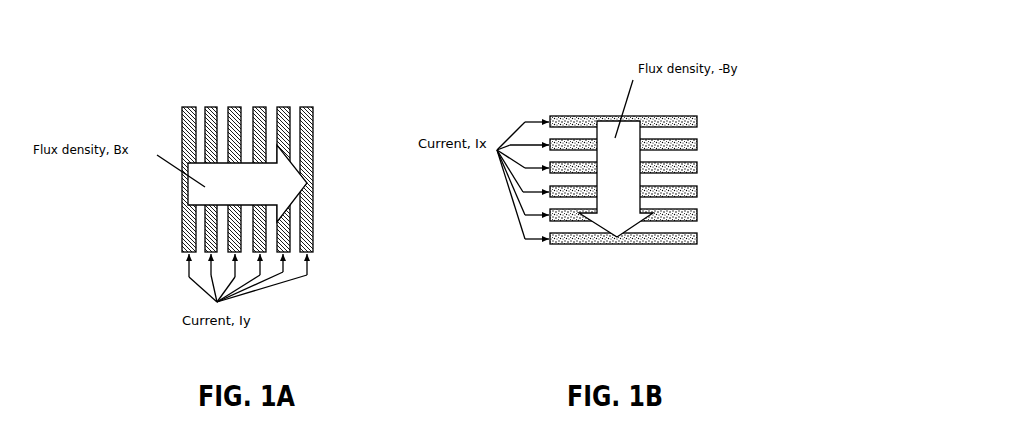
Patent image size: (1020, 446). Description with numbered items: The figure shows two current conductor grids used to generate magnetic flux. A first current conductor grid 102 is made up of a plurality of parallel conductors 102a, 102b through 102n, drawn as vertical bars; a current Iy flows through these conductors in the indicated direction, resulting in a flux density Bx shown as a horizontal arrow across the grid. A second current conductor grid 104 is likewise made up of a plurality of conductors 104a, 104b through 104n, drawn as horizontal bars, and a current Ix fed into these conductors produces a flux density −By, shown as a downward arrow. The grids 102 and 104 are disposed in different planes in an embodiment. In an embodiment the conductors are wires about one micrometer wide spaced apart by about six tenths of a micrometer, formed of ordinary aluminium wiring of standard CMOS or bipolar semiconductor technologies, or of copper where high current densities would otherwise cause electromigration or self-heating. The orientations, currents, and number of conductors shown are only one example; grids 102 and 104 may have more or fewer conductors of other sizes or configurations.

In FIG. 1A, the first current conductor grid 102 is at (233, 152).
In FIG. 1A, the conductor 102a is at (188, 243).
In FIG. 1A, the conductor 102b is at (215, 106).
In FIG. 1A, the conductor 102n is at (313, 106).
In FIG. 1B, the second current conductor grid 104 is at (626, 154).
In FIG. 1B, the conductor 104a is at (698, 122).
In FIG. 1B, the conductor 104b is at (698, 145).
In FIG. 1B, the conductor 104n is at (698, 236).